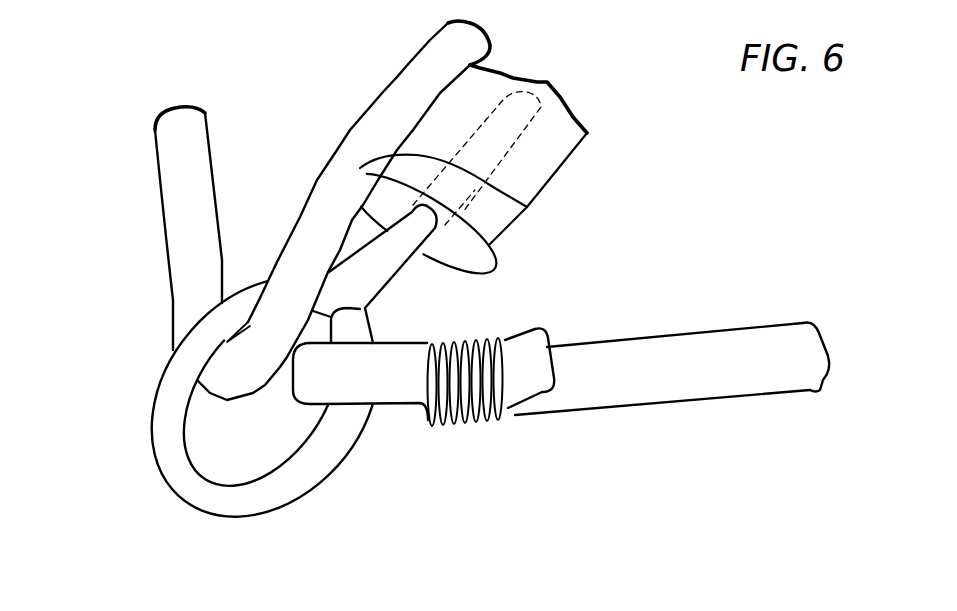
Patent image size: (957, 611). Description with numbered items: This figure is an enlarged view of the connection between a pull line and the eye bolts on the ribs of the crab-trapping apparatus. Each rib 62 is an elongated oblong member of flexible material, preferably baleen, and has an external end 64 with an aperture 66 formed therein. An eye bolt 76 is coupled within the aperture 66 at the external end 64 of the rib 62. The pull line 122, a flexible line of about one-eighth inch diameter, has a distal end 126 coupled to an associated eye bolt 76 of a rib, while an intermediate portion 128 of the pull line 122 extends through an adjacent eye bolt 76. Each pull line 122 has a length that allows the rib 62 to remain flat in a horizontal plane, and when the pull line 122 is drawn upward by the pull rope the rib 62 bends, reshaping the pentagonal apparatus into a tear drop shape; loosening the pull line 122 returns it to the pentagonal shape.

The rib 62 is at (592, 133).
The external end 64 is at (461, 250).
The aperture 66 is at (547, 82).
The eye bolt 76 is at (166, 465).
The pull line 122 is at (597, 343).
The distal end 126 is at (393, 412).
The intermediate portion 128 is at (177, 148).